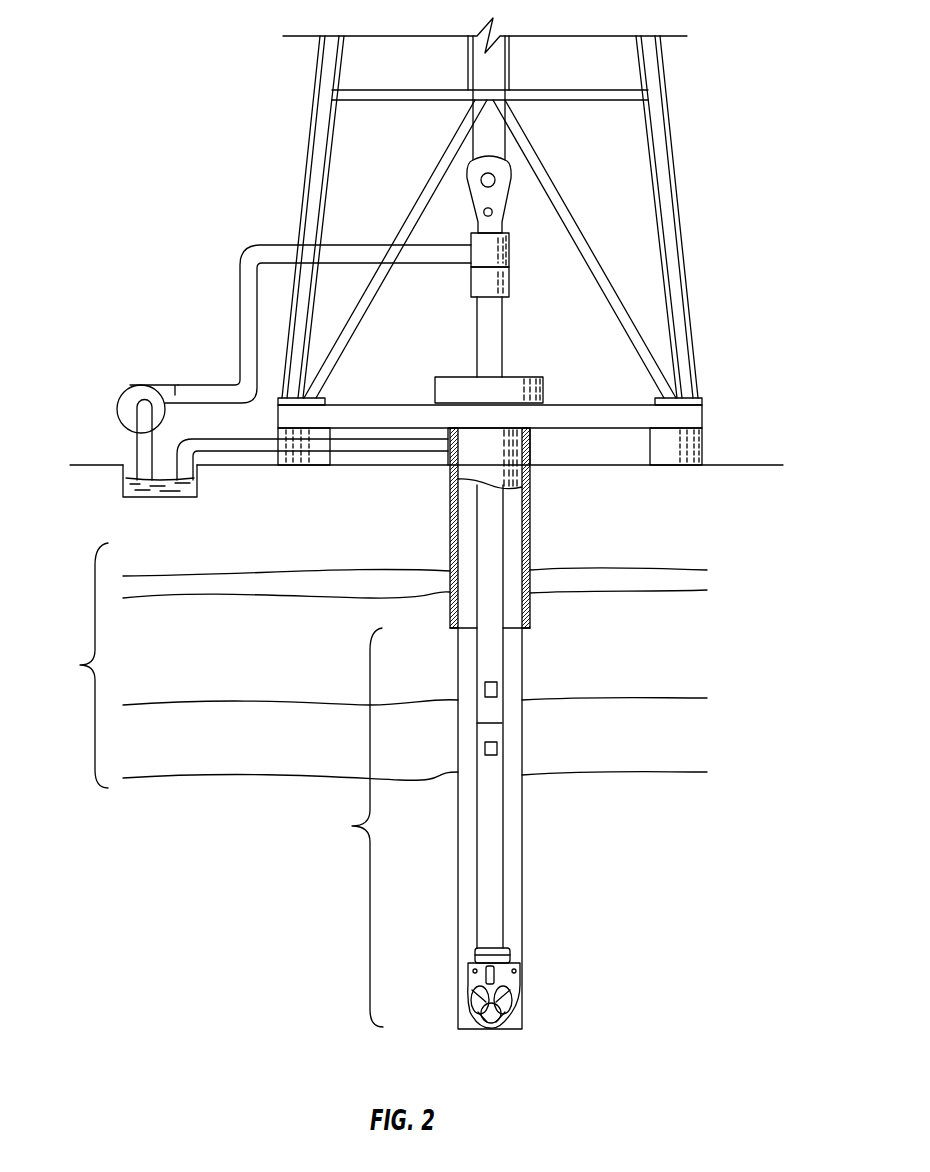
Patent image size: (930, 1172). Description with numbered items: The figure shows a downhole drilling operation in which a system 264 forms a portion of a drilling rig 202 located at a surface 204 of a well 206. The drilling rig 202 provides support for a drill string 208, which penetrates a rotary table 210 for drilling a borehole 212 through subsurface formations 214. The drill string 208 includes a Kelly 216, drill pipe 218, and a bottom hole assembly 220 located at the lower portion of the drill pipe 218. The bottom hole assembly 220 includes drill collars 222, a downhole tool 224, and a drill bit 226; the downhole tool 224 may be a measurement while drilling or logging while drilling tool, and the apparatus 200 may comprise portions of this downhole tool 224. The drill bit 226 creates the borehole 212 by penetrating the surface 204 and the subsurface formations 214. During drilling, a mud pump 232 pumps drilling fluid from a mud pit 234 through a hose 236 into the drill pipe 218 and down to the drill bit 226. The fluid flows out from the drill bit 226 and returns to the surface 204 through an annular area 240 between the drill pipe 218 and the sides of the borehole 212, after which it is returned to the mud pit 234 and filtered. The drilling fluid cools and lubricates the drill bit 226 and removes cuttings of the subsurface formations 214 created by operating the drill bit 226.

The system 264 is at (176, 146).
The drilling rig 202 is at (679, 164).
The surface 204 is at (725, 465).
The well 206 is at (541, 459).
The drill string 208 is at (506, 533).
The rotary table 210 is at (535, 377).
The borehole 212 is at (522, 566).
The subsurface formations 214 is at (372, 665).
The Kelly 216 is at (505, 320).
The drill pipe 218 is at (495, 655).
The bottom hole assembly 220 is at (347, 827).
The drill collars 222 is at (525, 619).
The downhole tool 224 is at (513, 730).
The drill bit 226 is at (512, 988).
The mud pump 232 is at (140, 385).
The mud pit 234 is at (128, 475).
The hose 236 is at (240, 300).
The annular area 240 is at (513, 670).
The apparatus 200 is at (497, 689).